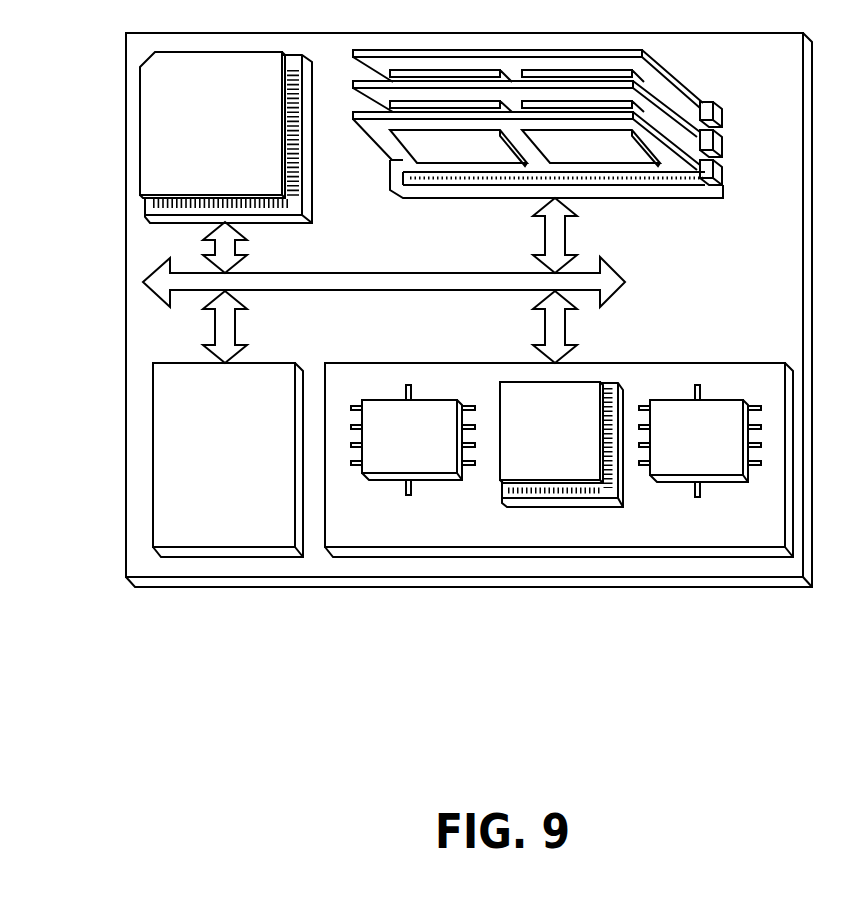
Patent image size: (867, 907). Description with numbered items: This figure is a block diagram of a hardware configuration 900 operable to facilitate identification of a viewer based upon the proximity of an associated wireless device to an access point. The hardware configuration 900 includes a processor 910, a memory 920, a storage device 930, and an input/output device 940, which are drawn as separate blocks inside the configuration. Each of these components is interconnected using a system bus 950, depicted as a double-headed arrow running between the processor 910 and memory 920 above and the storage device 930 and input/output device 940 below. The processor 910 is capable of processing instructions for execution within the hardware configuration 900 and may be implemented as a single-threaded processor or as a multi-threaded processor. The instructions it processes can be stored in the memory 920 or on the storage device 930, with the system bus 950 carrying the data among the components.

The hardware configuration 900 is at (107, 691).
The processor 910 is at (270, 186).
The memory 920 is at (703, 93).
The storage device 930 is at (283, 544).
The input/output device 940 is at (745, 363).
The system bus 950 is at (385, 291).